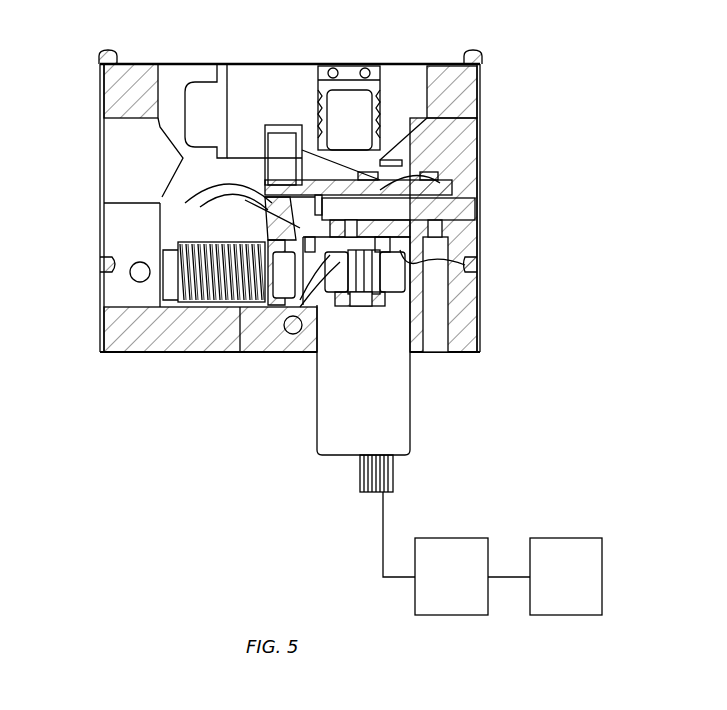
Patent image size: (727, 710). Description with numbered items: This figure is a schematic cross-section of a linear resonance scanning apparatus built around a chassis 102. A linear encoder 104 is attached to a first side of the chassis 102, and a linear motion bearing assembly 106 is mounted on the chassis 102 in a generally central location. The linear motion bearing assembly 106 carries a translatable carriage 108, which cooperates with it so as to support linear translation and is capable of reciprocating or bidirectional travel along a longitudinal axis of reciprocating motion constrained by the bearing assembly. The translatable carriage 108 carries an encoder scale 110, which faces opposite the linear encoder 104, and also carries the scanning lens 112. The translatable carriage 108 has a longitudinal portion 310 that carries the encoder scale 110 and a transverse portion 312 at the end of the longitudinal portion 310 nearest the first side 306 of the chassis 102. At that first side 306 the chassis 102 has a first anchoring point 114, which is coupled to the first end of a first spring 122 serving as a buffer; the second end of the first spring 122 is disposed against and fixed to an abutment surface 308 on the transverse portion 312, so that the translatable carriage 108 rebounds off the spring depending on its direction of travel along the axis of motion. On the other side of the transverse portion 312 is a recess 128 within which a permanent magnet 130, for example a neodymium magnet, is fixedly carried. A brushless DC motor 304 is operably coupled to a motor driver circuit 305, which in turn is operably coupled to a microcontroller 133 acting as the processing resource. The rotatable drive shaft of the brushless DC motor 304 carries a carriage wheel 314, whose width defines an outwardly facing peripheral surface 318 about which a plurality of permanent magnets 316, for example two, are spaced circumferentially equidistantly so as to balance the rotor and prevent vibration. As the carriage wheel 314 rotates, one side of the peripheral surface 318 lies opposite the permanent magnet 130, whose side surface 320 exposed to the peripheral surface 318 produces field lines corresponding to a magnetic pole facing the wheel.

The chassis 102 is at (122, 97).
The linear encoder 104 is at (350, 105).
The linear motion bearing assembly 106 is at (468, 210).
The translatable carriage 108 is at (172, 205).
The encoder scale 110 is at (400, 165).
The scanning lens 112 is at (282, 130).
The first anchoring point 114 is at (125, 272).
The first spring 122 is at (195, 307).
The recess 128 is at (292, 334).
The permanent magnet 130 is at (275, 302).
The microcontroller 133 is at (585, 589).
The brushless DC motor 304 is at (412, 437).
The motor driver circuit 305 is at (471, 589).
The first side 306 is at (83, 180).
The abutment surface 308 is at (258, 232).
The longitudinal portion 310 is at (430, 180).
The transverse portion 312 is at (178, 188).
The carriage wheel 314 is at (470, 265).
The permanent magnets 316 is at (372, 305).
The peripheral surface 318 is at (405, 280).
The side surface 320 is at (318, 335).